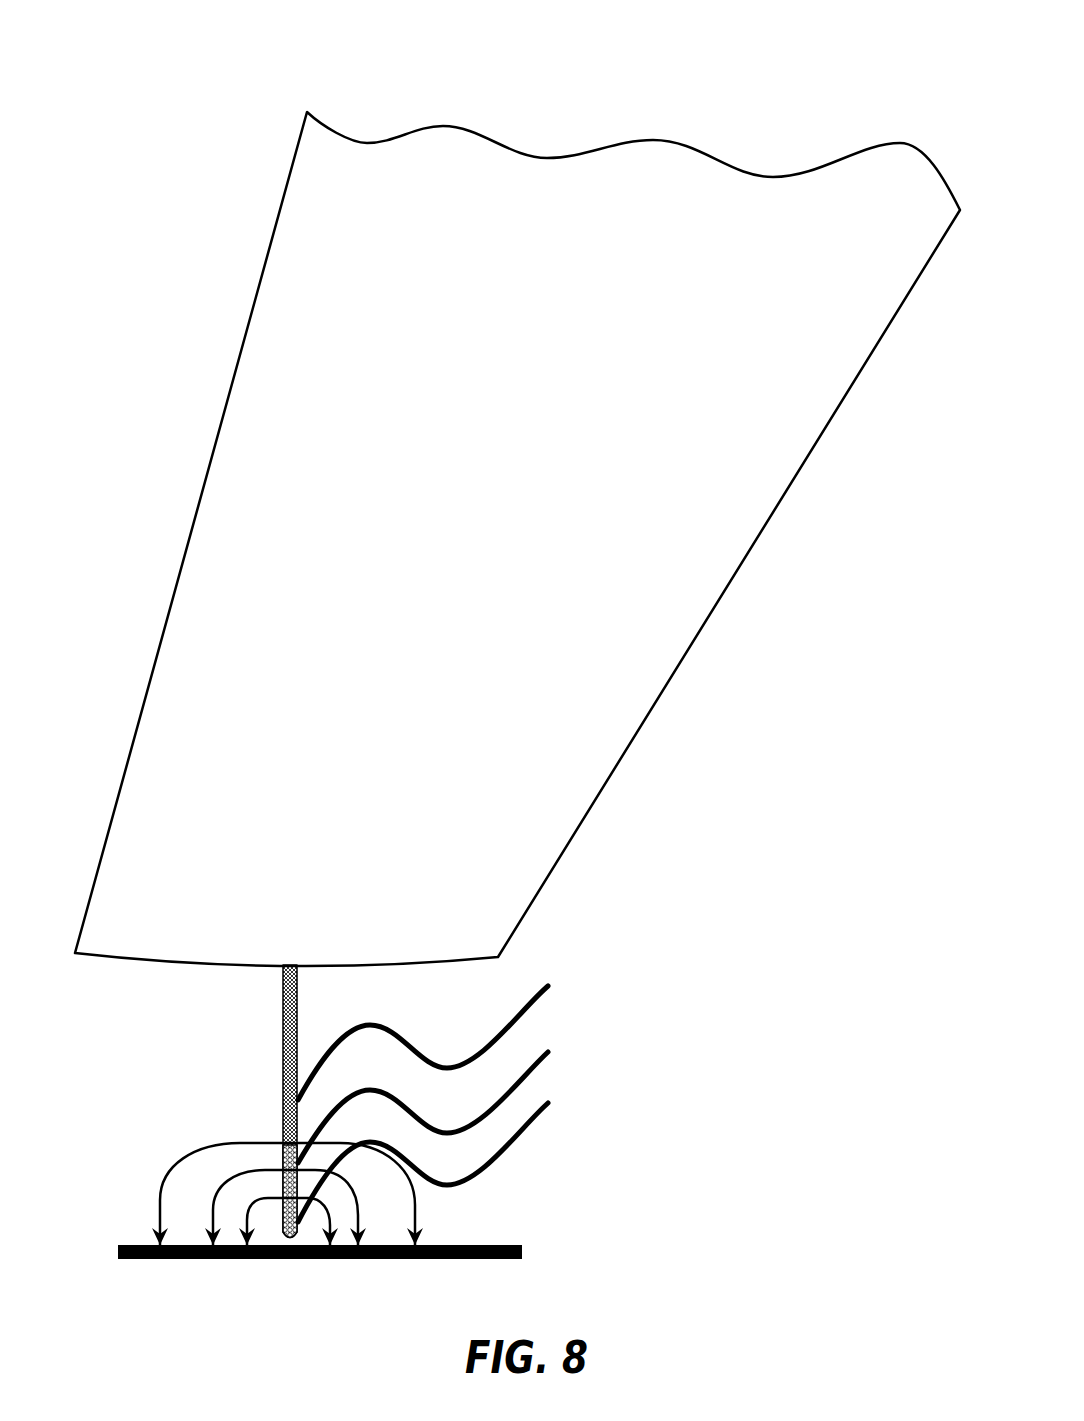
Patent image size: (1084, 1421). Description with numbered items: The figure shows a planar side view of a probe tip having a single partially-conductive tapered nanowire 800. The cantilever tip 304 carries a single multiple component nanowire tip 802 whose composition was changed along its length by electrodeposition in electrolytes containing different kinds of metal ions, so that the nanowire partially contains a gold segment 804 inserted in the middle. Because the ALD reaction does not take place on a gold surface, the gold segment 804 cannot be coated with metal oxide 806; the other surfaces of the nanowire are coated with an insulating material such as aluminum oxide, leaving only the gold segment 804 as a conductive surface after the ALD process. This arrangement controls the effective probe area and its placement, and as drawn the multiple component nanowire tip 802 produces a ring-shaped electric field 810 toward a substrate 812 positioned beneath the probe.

The probe tip having a single partially-conductive tapered nanowire 800 is at (135, 82).
The cantilever tip 304 is at (227, 407).
The multiple component nanowire tip 802 is at (247, 1024).
The gold segment 804 is at (453, 1095).
The metal oxide 806 is at (453, 1092).
The ring-shaped electric field 810 is at (165, 1147).
The substrate 812 is at (495, 1247).